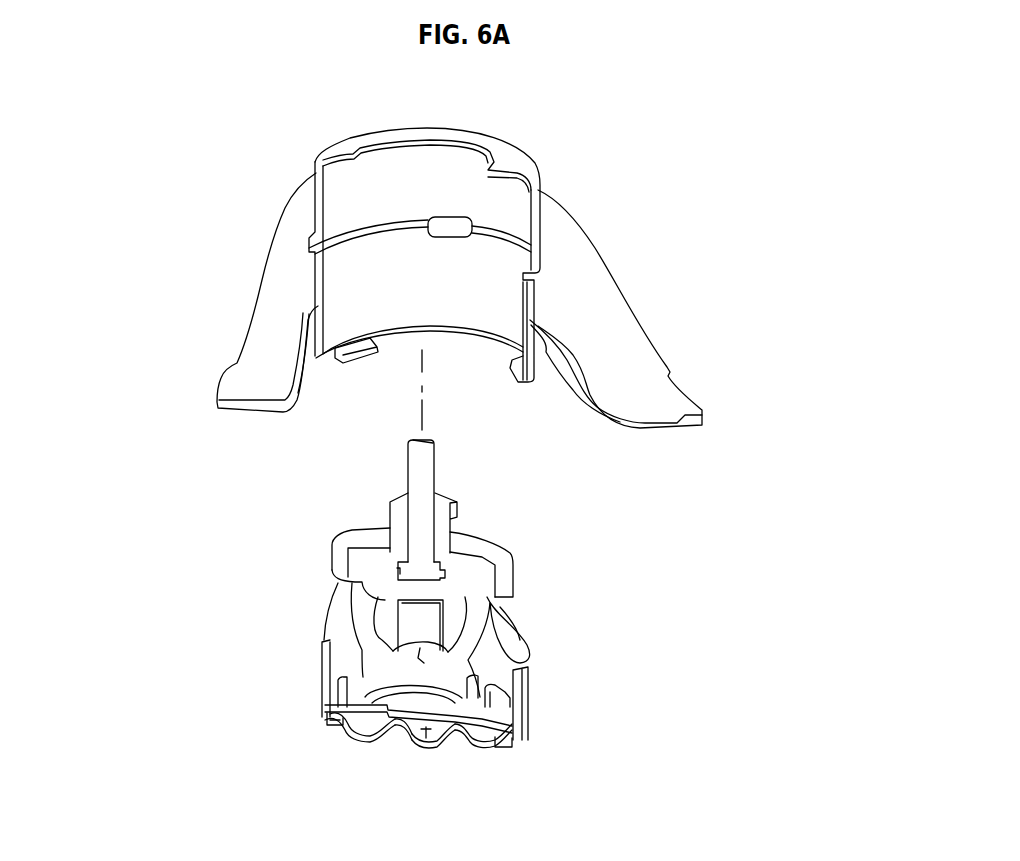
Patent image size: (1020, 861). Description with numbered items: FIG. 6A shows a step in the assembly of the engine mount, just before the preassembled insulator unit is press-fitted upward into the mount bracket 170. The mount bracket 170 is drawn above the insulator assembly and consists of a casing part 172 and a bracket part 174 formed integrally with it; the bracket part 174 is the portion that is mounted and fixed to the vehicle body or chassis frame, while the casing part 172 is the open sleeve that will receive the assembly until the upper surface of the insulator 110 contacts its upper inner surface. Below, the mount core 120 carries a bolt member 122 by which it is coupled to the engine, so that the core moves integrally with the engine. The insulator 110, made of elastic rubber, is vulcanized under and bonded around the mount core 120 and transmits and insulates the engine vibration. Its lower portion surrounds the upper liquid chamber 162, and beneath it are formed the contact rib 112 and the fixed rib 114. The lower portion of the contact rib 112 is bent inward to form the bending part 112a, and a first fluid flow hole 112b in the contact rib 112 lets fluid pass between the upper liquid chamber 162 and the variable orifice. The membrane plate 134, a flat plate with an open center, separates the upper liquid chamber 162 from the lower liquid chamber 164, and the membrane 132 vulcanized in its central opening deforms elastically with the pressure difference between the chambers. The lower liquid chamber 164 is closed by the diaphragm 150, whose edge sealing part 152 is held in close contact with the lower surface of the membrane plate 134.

The insulator 110 is at (500, 540).
The contact rib 112 is at (328, 718).
The bending part 112a is at (507, 747).
The first fluid flow hole 112b is at (480, 688).
The fixed rib 114 is at (333, 692).
The mount core 120 is at (477, 573).
The bolt member 122 is at (413, 463).
The membrane 132 is at (403, 724).
The membrane plate 134 is at (367, 740).
The diaphragm 150 is at (418, 747).
The sealing part 152 is at (323, 718).
The upper liquid chamber 162 is at (417, 658).
The lower liquid chamber 164 is at (427, 745).
The mount bracket 170 is at (625, 113).
The casing part 172 is at (533, 160).
The bracket part 174 is at (592, 243).